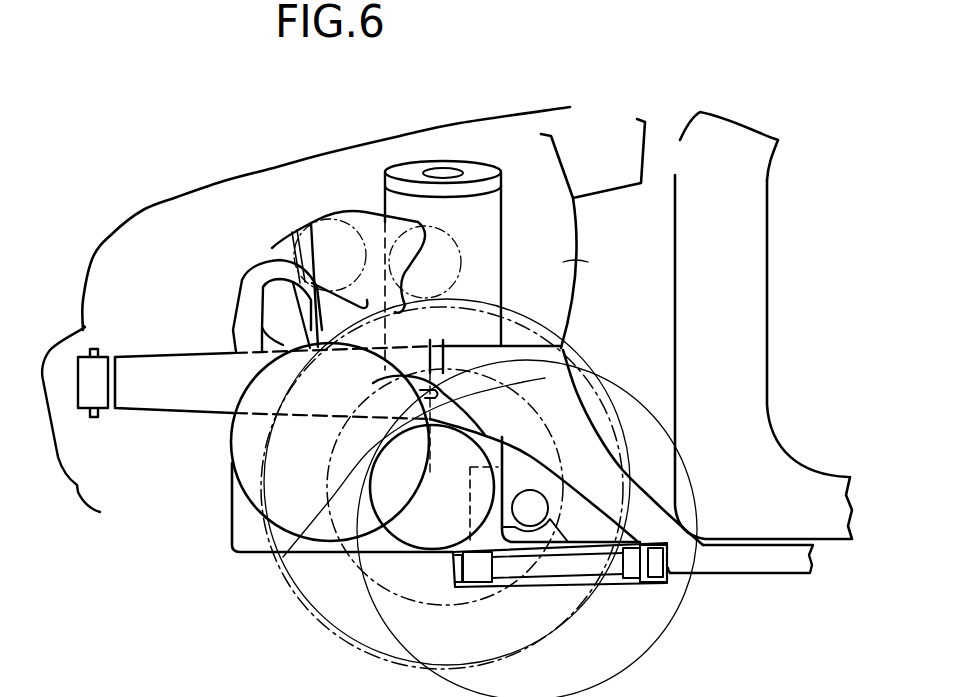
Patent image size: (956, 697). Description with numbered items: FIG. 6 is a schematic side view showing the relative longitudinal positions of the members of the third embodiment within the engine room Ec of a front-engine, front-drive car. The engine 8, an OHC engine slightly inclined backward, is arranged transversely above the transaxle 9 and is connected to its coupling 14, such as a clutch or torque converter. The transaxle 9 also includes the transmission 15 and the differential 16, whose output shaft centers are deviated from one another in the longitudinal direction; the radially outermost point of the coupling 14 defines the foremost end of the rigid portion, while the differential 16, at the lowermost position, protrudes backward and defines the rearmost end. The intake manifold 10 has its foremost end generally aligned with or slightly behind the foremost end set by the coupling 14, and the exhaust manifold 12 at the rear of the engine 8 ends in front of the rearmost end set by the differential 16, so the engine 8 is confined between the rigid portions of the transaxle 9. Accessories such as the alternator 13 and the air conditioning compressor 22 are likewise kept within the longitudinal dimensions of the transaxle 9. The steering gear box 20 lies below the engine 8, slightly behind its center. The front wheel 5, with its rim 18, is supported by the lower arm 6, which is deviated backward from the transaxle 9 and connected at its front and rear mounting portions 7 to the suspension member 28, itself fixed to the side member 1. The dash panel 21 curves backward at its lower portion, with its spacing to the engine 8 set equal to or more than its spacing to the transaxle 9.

The side member 1 is at (142, 355).
The front wheel 5 is at (281, 574).
The lower arm 6 is at (580, 561).
The mounting portion 7 is at (462, 577).
The engine 8 is at (365, 211).
The transaxle 9 is at (218, 506).
The intake manifold 10 is at (255, 272).
The exhaust manifold 12 is at (413, 317).
The alternator 13 is at (294, 233).
The coupling 14 is at (242, 388).
The transmission 15 is at (563, 353).
The differential 16 is at (260, 553).
The rim 18 is at (318, 612).
The steering gear box 20 is at (530, 512).
The dash panel 21 is at (592, 261).
The air conditioning compressor 22 is at (445, 250).
The suspension member 28 is at (580, 563).
The engine room Ec is at (552, 229).